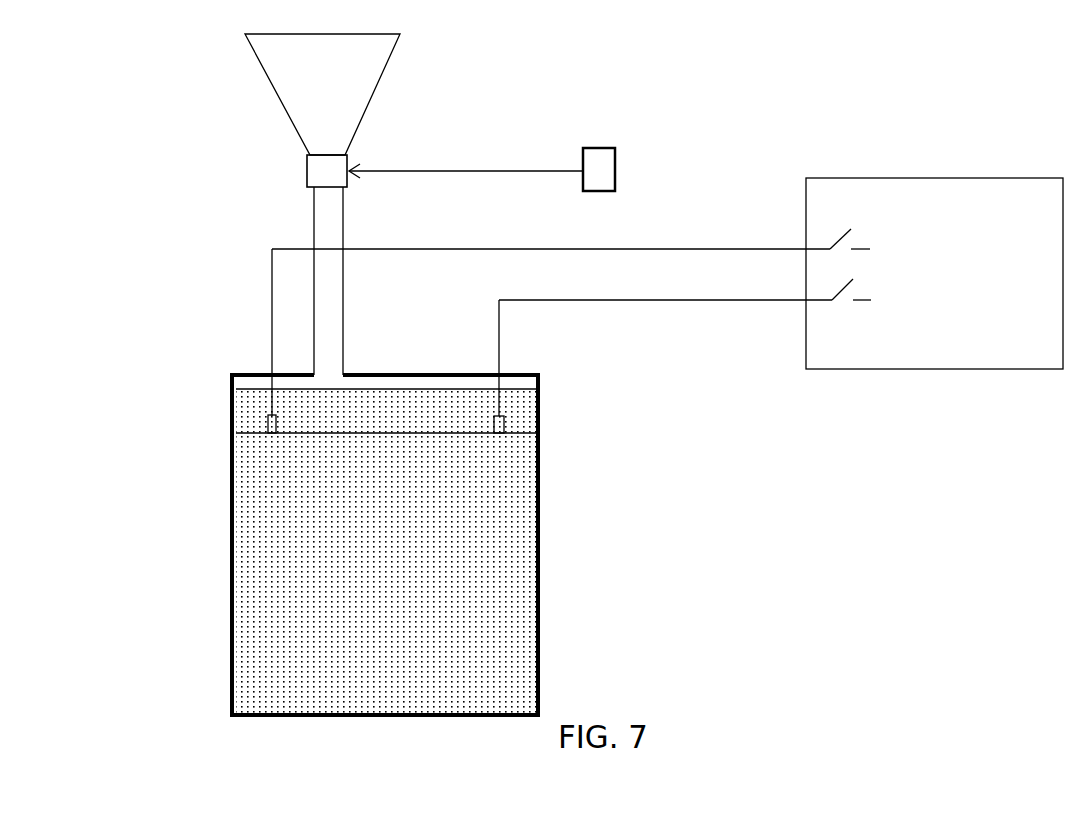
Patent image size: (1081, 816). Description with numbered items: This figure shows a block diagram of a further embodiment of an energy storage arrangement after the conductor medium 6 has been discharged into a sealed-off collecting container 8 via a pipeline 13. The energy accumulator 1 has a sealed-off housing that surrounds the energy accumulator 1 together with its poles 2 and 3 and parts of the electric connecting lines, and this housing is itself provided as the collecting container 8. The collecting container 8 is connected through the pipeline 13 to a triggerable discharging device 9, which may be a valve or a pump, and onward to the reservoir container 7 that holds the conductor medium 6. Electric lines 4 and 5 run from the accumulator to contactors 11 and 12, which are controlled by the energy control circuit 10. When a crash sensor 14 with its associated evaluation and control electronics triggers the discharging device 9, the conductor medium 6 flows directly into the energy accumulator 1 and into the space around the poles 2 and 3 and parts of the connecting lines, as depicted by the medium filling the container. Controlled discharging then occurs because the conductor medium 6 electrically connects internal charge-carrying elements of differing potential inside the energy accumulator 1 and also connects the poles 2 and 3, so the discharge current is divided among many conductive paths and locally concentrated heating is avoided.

The energy accumulator 1 is at (508, 571).
The pole 2 is at (267, 415).
The pole 3 is at (502, 415).
The electric line 4 is at (551, 231).
The electric line 5 is at (665, 318).
The conductor medium 6 is at (365, 405).
The reservoir container 7 is at (255, 55).
The collecting container 8 is at (232, 395).
The triggerable discharging device 9 is at (310, 165).
The energy control circuit 10 is at (962, 205).
The contactor 11 is at (847, 216).
The contactor 12 is at (849, 312).
The pipeline 13 is at (333, 228).
The crash sensor 14 is at (618, 148).